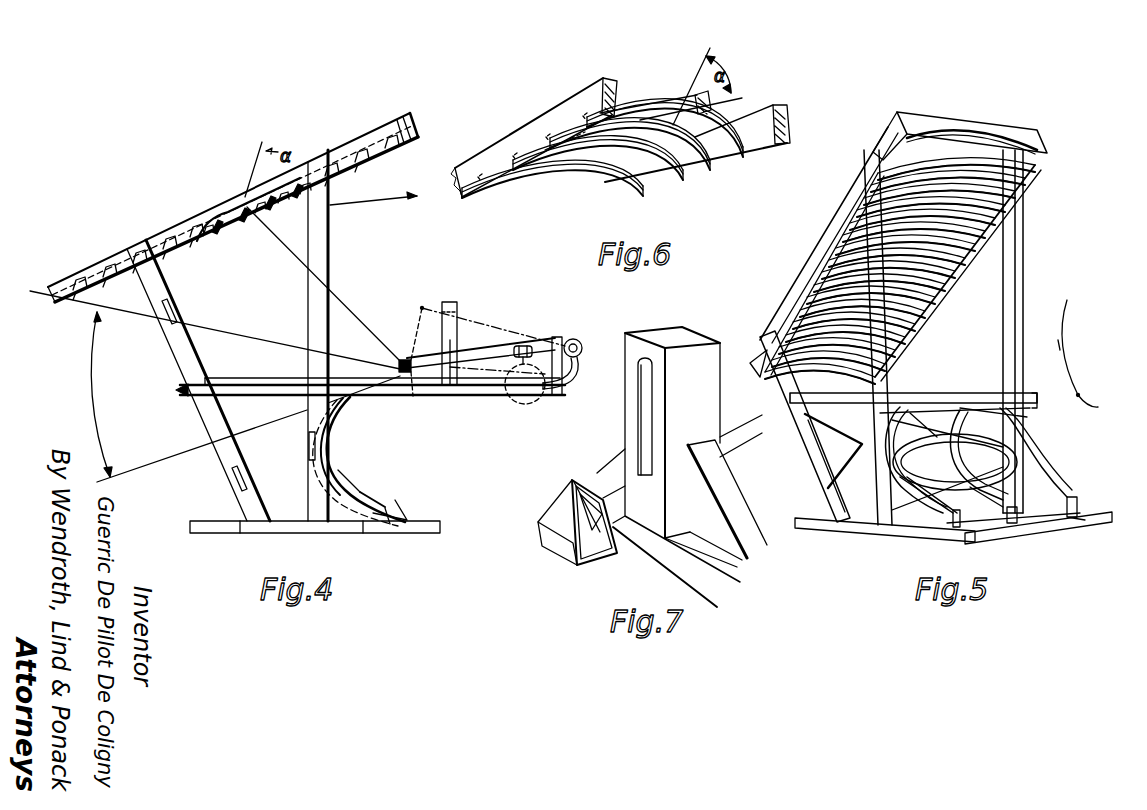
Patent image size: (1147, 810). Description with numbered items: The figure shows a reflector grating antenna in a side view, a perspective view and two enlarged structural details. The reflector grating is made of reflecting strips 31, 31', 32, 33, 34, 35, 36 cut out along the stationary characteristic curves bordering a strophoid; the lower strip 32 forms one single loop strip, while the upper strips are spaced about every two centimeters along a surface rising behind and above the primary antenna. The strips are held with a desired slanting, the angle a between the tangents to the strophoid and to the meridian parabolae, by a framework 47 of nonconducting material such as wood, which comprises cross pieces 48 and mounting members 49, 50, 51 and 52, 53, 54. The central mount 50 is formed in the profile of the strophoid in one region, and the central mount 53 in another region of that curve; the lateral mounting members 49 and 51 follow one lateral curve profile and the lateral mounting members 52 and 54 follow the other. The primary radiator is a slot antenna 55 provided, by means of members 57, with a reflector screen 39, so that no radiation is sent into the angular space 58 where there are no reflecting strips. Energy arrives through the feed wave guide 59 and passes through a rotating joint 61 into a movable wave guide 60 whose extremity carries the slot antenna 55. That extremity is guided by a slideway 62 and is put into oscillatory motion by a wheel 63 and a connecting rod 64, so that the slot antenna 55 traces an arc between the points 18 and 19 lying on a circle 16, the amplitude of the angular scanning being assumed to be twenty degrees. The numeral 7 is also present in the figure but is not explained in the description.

In FIG. 5, the reference axis 7 is at (1060, 345).
In FIG. 4, the circle 16 is at (420, 311).
In FIG. 5, the circle 16 is at (1098, 407).
In FIG. 4, the end point of arc 18 is at (418, 308).
In FIG. 5, the end point of arc 18 is at (1068, 301).
In FIG. 4, the end point of arc 19 is at (414, 395).
In FIG. 5, the end point of arc 19 is at (1080, 394).
In FIG. 4, the strip 31 is at (392, 502).
In FIG. 5, the strip 31 is at (1038, 452).
In FIG. 4, the strip 31' is at (366, 459).
In FIG. 5, the strip 31' is at (976, 460).
In FIG. 4, the lower strip 32 is at (340, 463).
In FIG. 5, the lower strip 32 is at (1019, 463).
In FIG. 4, the strip 33 is at (294, 204).
In FIG. 6, the strip 33 is at (752, 153).
In FIG. 5, the strip 33 is at (970, 210).
In FIG. 4, the strip 34 is at (278, 214).
In FIG. 6, the strip 34 is at (722, 164).
In FIG. 5, the strip 34 is at (965, 245).
In FIG. 4, the strip 35 is at (259, 229).
In FIG. 6, the strip 35 is at (688, 178).
In FIG. 5, the strip 35 is at (961, 258).
In FIG. 4, the strip 36 is at (225, 240).
In FIG. 6, the strip 36 is at (655, 190).
In FIG. 5, the strip 36 is at (948, 271).
In FIG. 7, the reflector screen 39 is at (544, 543).
In FIG. 4, the framework 47 is at (308, 303).
In FIG. 7, the framework 47 is at (677, 587).
In FIG. 5, the framework 47 is at (788, 412).
In FIG. 5, the cross pieces 48 is at (943, 108).
In FIG. 4, the lateral mounting member 49 is at (185, 221).
In FIG. 6, the lateral mounting member 49 is at (530, 123).
In FIG. 5, the lateral mounting member 49 is at (809, 273).
In FIG. 4, the central mounting member 50 is at (231, 204).
In FIG. 6, the central mounting member 50 is at (665, 108).
In FIG. 5, the central mounting member 50 is at (994, 130).
In FIG. 4, the lateral mounting member 51 is at (245, 237).
In FIG. 6, the lateral mounting member 51 is at (756, 114).
In FIG. 5, the lateral mounting member 51 is at (932, 298).
In FIG. 4, the lateral mounting member 52 is at (372, 500).
In FIG. 5, the lateral mounting member 52 is at (935, 529).
In FIG. 4, the central mounting member 53 is at (358, 486).
In FIG. 5, the central mounting member 53 is at (1018, 523).
In FIG. 5, the lateral mounting member 54 is at (1078, 510).
In FIG. 4, the slot antenna 55 is at (410, 361).
In FIG. 7, the slot antenna 55 is at (583, 516).
In FIG. 7, the members 57 is at (568, 487).
In FIG. 4, the angular space 58 is at (86, 402).
In FIG. 4, the feed wave guide 59 is at (180, 397).
In FIG. 4, the movable wave guide 60 is at (478, 358).
In FIG. 7, the movable wave guide 60 is at (737, 449).
In FIG. 4, the rotating joint 61 is at (576, 340).
In FIG. 4, the slideway 62 is at (442, 345).
In FIG. 7, the slideway 62 is at (640, 428).
In FIG. 4, the wheel 63 is at (532, 407).
In FIG. 4, the connecting rod 64 is at (468, 373).